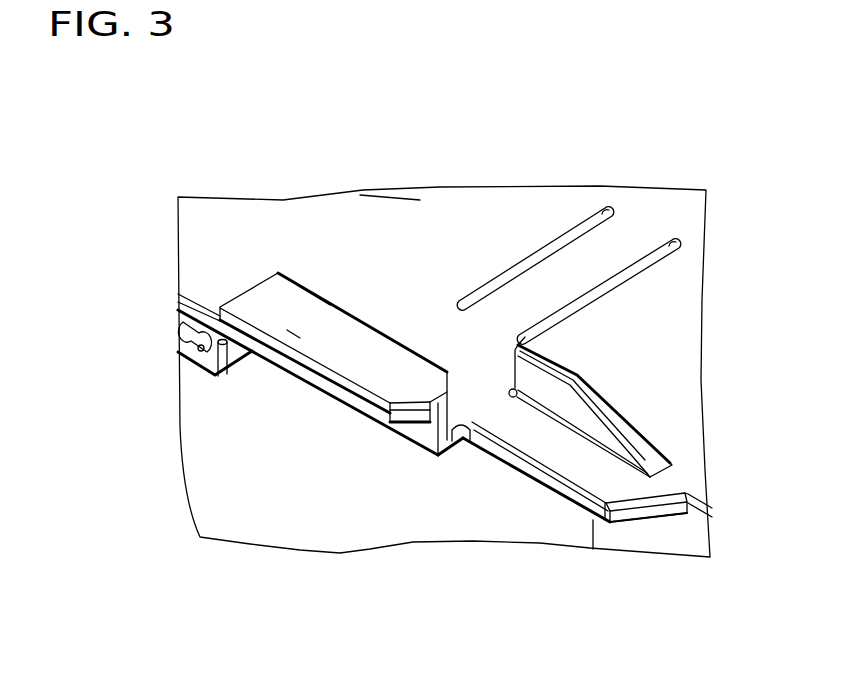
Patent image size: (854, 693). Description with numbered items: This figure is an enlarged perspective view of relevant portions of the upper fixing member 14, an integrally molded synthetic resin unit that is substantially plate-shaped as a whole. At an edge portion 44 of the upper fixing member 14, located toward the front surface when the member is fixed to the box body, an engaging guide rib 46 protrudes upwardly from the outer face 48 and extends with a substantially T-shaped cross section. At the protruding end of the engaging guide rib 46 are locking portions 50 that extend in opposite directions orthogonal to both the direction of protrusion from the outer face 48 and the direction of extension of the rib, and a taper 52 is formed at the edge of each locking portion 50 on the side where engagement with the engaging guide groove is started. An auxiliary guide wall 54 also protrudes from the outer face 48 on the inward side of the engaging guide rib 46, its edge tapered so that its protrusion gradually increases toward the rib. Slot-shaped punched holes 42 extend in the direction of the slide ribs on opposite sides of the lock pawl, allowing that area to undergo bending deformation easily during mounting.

The upper fixing member 14 is at (652, 170).
The punched holes 42 is at (557, 242).
The edge portion 44 is at (290, 371).
The engaging guide rib 46 is at (304, 270).
The outer face 48 is at (376, 232).
The locking portions 50 is at (297, 290).
The taper 52 is at (415, 413).
The auxiliary guide wall 54 is at (567, 413).